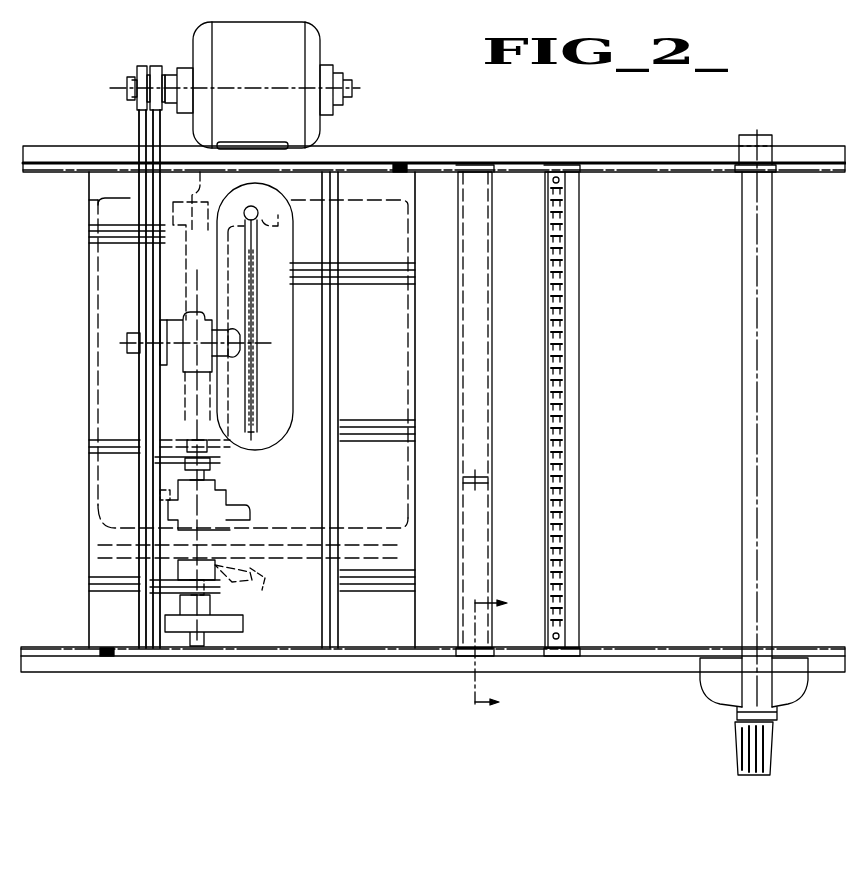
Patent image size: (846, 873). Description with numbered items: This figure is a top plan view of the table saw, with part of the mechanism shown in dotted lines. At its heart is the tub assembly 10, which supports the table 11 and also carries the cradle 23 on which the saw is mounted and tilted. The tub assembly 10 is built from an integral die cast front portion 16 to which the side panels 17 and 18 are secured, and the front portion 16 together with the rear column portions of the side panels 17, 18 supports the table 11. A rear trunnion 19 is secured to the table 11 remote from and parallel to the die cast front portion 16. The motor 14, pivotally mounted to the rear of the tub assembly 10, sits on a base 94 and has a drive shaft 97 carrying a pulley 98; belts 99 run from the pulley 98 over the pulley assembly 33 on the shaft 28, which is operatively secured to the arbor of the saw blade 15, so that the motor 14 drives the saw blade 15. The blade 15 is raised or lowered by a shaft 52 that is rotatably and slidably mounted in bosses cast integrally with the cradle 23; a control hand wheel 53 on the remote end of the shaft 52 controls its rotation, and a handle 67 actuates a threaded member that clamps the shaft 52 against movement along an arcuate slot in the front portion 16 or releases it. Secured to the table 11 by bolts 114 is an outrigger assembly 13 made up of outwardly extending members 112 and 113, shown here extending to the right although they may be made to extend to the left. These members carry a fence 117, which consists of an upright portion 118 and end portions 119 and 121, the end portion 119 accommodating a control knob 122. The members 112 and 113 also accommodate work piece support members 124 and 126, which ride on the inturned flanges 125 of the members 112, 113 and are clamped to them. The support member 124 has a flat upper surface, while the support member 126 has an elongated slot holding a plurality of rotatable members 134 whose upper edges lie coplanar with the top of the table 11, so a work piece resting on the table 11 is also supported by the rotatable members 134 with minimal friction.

The tub assembly 10 is at (104, 404).
The table 11 is at (90, 586).
The outrigger assembly 13 is at (592, 150).
The motor 14 is at (320, 44).
The saw blade 15 is at (258, 278).
The front portion 16 is at (120, 552).
The side panel 17 is at (94, 376).
The side panel 18 is at (410, 397).
The rear trunnion 19 is at (104, 196).
The cradle 23 is at (226, 490).
The shaft 28 is at (130, 345).
The pulley assembly 33 is at (138, 336).
The shaft 52 is at (214, 472).
The control hand wheel 53 is at (230, 626).
The handle 67 is at (256, 586).
The base 94 is at (261, 146).
The drive shaft 97 is at (126, 84).
The pulley 98 is at (145, 67).
The belts 99 is at (153, 132).
The outrigger member 112 is at (636, 668).
The outrigger member 113 is at (658, 160).
The bolts 114 is at (400, 162).
The fence 117 is at (780, 456).
The upright portion 118 is at (768, 488).
The end portion 119 is at (786, 698).
The end portion 121 is at (766, 135).
The control knob 122 is at (772, 757).
The work piece support member 124 is at (500, 469).
The inturned flange 125 is at (703, 172).
The work piece support member 126 is at (587, 433).
The rotatable members 134 is at (566, 470).